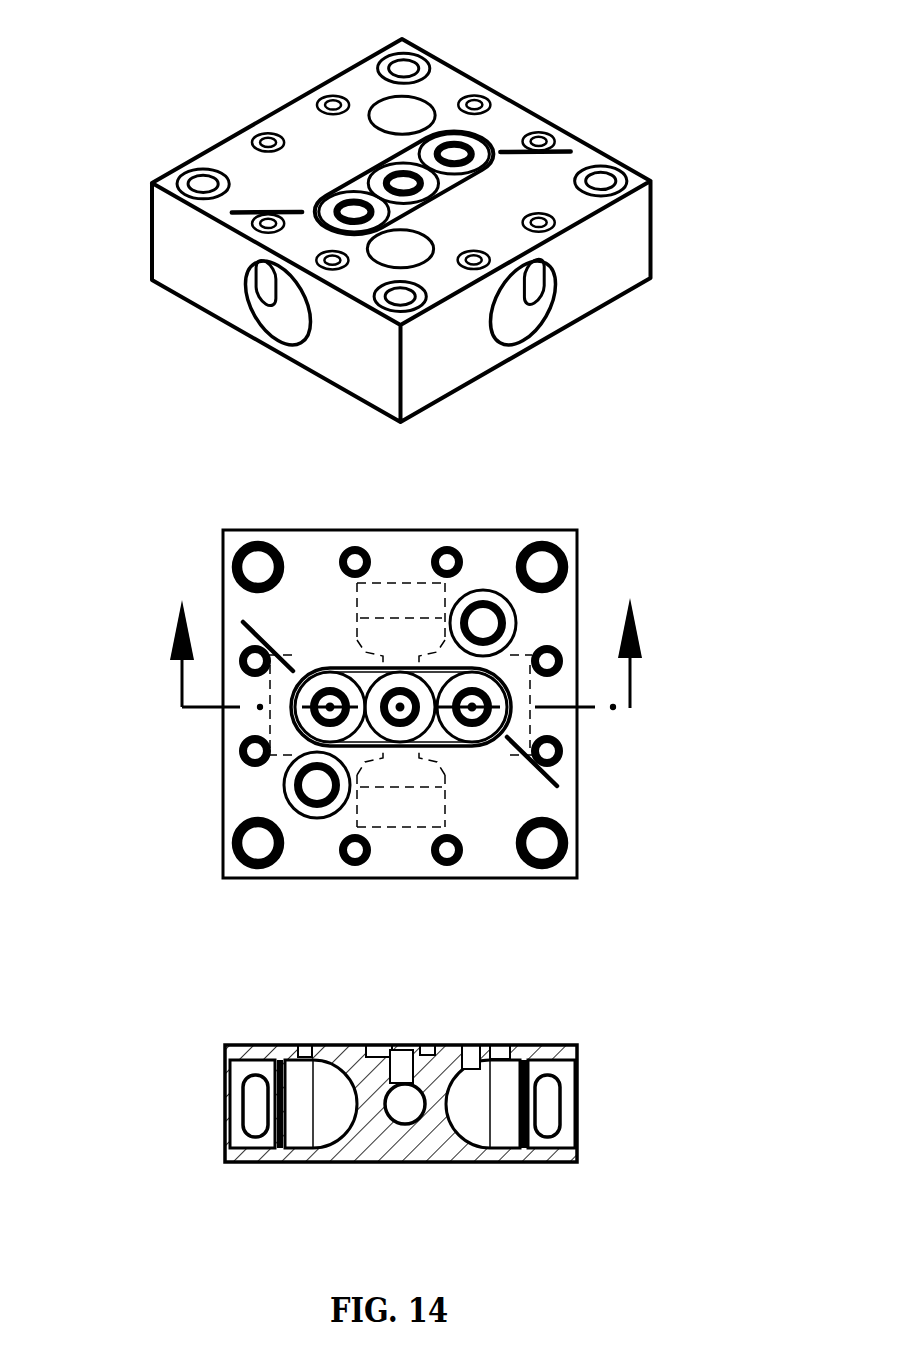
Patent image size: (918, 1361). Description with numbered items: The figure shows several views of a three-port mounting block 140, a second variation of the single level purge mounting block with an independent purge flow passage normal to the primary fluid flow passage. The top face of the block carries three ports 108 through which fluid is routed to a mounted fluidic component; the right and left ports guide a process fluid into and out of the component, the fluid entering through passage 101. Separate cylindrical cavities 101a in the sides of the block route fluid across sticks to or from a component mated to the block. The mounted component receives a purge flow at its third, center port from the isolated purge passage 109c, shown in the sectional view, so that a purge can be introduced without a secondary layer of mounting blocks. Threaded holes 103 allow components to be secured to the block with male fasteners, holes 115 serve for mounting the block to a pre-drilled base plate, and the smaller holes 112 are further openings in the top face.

The block 140 is at (308, 125).
The port 108 is at (393, 153).
The passage 101 is at (283, 327).
The cylindrical cavity 101a is at (525, 323).
The mounting holes 112 is at (445, 552).
The threaded hole 103 is at (543, 569).
The symmetrically opposing hole 115 is at (315, 783).
The isolated purge passage 109c is at (407, 1105).